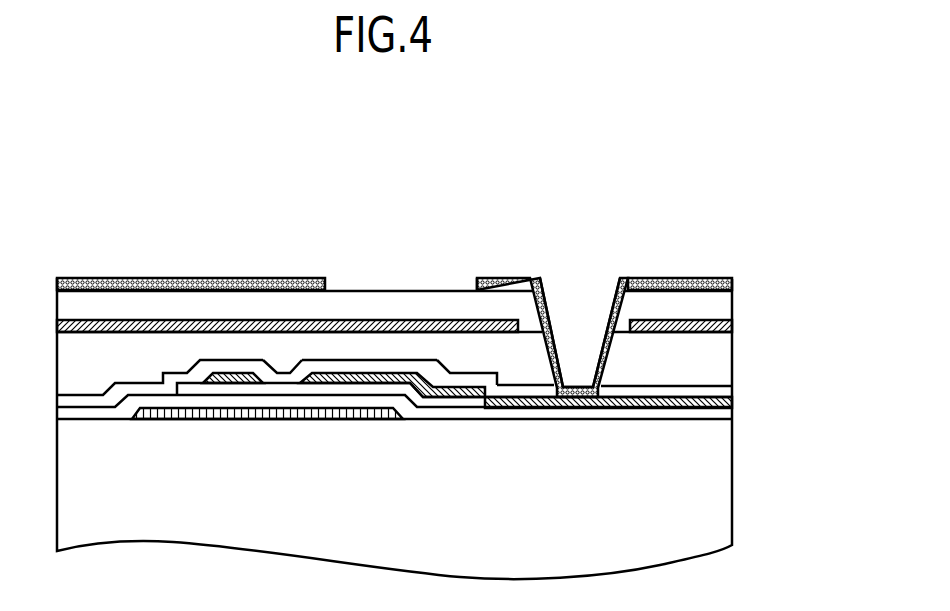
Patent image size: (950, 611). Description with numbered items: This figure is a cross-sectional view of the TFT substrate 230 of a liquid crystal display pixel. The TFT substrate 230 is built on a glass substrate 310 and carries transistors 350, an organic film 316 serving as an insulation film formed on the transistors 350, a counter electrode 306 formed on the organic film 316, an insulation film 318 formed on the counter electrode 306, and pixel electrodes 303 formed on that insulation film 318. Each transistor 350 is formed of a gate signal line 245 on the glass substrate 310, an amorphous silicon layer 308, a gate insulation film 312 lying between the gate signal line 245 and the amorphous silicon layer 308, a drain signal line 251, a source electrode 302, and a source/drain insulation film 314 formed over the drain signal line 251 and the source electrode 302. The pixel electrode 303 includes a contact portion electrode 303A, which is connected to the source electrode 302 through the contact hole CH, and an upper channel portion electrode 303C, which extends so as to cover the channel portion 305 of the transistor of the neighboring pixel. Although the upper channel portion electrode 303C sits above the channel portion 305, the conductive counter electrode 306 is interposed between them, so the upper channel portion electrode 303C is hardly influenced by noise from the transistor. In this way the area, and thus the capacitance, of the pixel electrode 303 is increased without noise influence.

The TFT substrate 230 is at (392, 167).
The gate signal line 245 is at (378, 422).
The drain signal line 251 is at (233, 380).
The source electrode 302 is at (480, 408).
The pixel electrode 303 is at (720, 283).
The contact portion electrode 303A is at (495, 277).
The upper channel portion electrode 303C is at (167, 282).
The channel portion 305 is at (293, 350).
The counter electrode 306 is at (105, 328).
The amorphous silicon layer 308 is at (207, 388).
The glass substrate 310 is at (712, 452).
The gate insulation film 312 is at (720, 413).
The source/drain insulation film 314 is at (712, 392).
The organic film 316 is at (707, 355).
The insulation film 318 is at (712, 307).
The transistor 350 is at (355, 348).
The contact hole CH is at (580, 299).